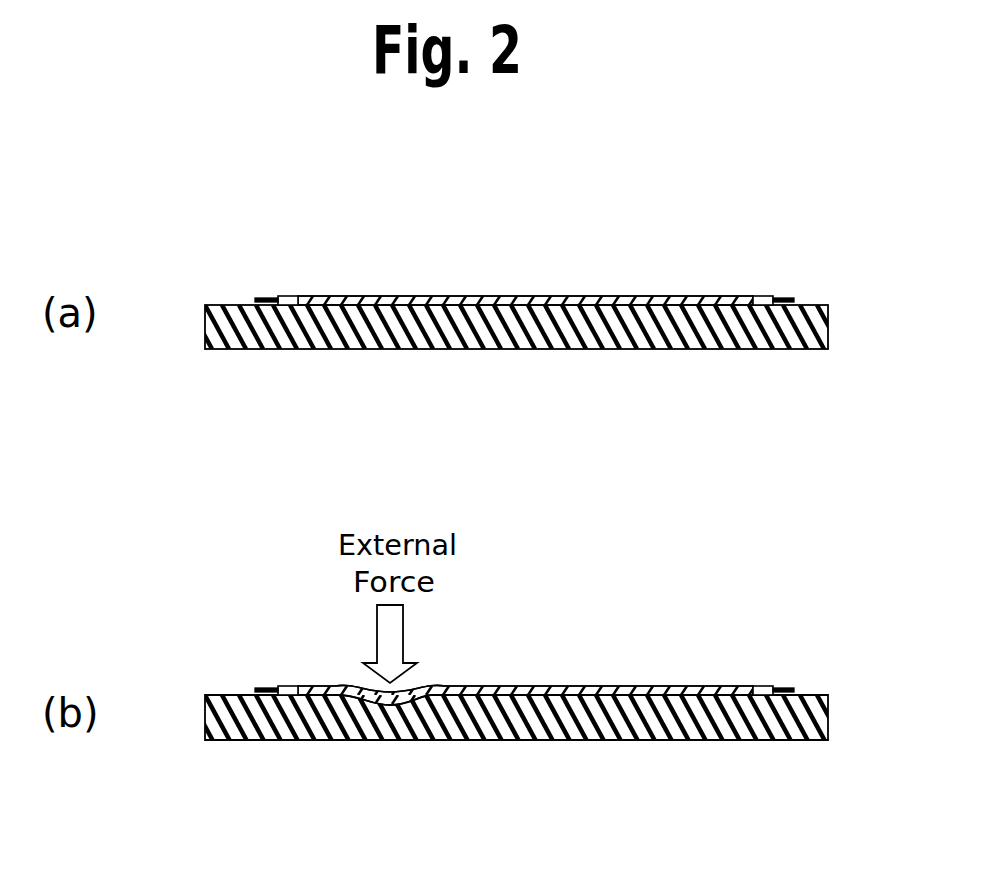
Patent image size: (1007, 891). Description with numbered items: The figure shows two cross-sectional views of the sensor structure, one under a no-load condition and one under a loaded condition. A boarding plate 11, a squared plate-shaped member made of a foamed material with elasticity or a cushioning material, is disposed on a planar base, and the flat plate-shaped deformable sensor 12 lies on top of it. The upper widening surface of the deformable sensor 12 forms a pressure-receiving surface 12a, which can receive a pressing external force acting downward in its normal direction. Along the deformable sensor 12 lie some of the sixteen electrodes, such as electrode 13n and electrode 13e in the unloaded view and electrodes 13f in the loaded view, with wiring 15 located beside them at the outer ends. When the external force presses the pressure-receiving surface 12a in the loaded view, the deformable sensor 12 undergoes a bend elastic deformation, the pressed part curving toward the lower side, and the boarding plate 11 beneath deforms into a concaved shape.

The boarding plate 11 is at (490, 349).
The deformable sensor 12 is at (615, 305).
The pressure-receiving surface 12a is at (508, 291).
The electrode 13n is at (285, 296).
The electrode 13e is at (763, 296).
The electrode 13f is at (285, 686).
The wiring 15 is at (268, 297).